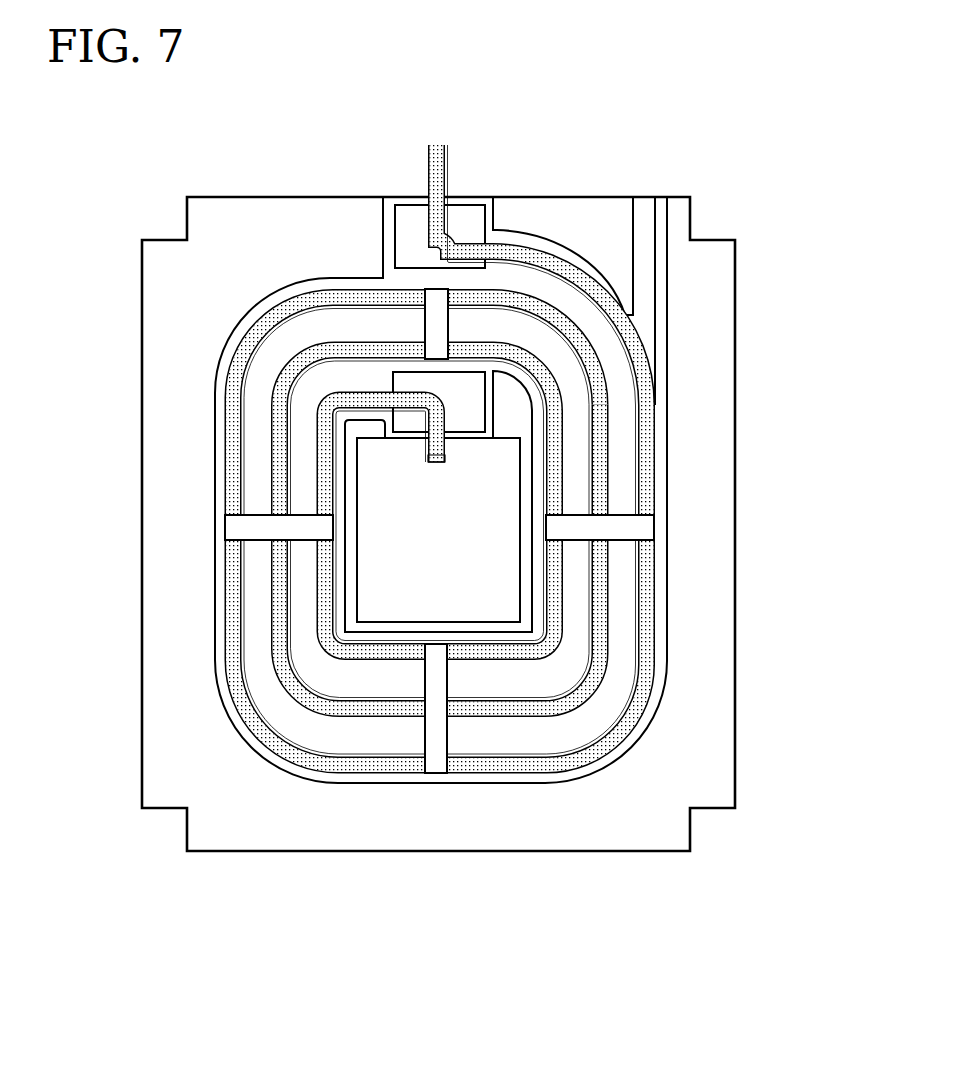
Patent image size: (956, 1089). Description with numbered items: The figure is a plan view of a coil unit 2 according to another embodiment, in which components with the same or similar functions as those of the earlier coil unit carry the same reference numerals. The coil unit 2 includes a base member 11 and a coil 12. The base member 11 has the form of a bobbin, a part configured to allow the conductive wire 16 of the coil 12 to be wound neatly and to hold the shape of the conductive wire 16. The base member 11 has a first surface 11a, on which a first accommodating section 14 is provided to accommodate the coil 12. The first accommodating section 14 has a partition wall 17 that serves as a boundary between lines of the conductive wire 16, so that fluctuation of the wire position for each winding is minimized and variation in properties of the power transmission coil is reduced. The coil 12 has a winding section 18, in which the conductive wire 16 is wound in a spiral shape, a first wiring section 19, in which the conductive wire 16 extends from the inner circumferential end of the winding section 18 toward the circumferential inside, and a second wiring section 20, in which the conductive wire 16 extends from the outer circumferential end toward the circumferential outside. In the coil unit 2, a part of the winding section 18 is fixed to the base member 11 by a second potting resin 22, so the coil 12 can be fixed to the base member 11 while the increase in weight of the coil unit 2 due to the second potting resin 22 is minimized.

The coil unit 2 is at (436, 529).
The base member 11 is at (700, 345).
The first surface 11a is at (700, 433).
The coil 12 is at (253, 303).
The first accommodating section 14 is at (424, 442).
The conductive wire 16 is at (637, 712).
The partition wall 17 is at (620, 673).
The winding section 18 is at (625, 628).
The first wiring section 19 is at (437, 463).
The second wiring section 20 is at (444, 150).
The second potting resin 22 is at (440, 318).